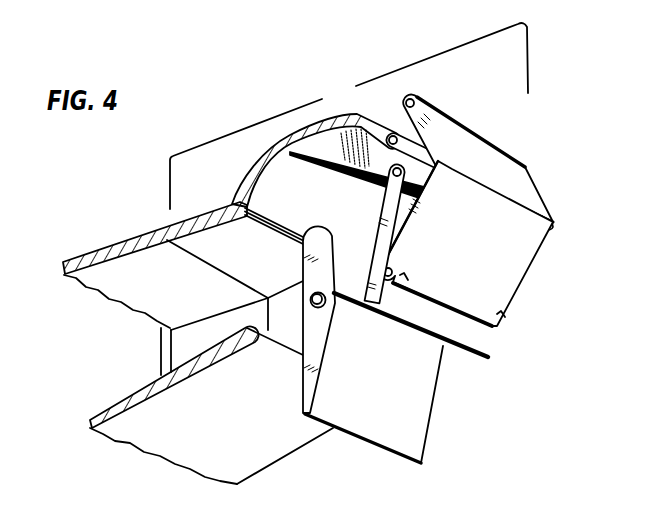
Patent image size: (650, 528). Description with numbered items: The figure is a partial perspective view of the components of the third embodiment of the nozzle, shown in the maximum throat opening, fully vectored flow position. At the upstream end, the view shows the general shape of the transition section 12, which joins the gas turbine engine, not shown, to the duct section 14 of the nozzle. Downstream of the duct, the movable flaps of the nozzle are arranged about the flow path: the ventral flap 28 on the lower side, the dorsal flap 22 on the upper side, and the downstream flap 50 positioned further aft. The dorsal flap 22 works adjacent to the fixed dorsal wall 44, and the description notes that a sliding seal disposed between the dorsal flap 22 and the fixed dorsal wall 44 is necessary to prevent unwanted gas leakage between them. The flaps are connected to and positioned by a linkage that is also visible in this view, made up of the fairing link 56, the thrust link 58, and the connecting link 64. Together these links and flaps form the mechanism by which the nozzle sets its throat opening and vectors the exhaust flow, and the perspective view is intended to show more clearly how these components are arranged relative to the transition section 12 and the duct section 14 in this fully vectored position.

The transition section 12 is at (170, 157).
The duct section 14 is at (349, 116).
The dorsal flap 22 is at (353, 182).
The ventral flap 28 is at (424, 393).
The fixed dorsal wall 44 is at (281, 138).
The downstream flap 50 is at (382, 213).
The fairing link 56 is at (528, 272).
The thrust link 58 is at (526, 181).
The connecting link 64 is at (410, 152).